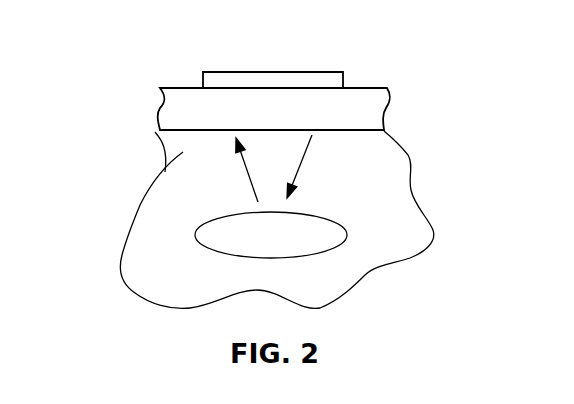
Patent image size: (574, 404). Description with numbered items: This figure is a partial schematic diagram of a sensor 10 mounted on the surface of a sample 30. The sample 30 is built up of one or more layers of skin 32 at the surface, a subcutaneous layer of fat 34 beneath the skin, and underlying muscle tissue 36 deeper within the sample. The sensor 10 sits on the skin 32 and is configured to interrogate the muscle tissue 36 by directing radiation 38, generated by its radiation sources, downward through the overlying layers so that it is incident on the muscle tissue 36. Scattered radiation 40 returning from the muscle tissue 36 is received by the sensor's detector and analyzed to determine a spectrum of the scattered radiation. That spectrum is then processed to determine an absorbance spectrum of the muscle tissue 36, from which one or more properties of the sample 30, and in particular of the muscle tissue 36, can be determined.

The sensor 10 is at (310, 72).
The layers of skin 32 is at (142, 111).
The subcutaneous layer of fat 34 is at (162, 168).
The sample 30 is at (387, 193).
The muscle tissue 36 is at (280, 241).
The radiation 38 is at (307, 155).
The scattered radiation 40 is at (248, 185).